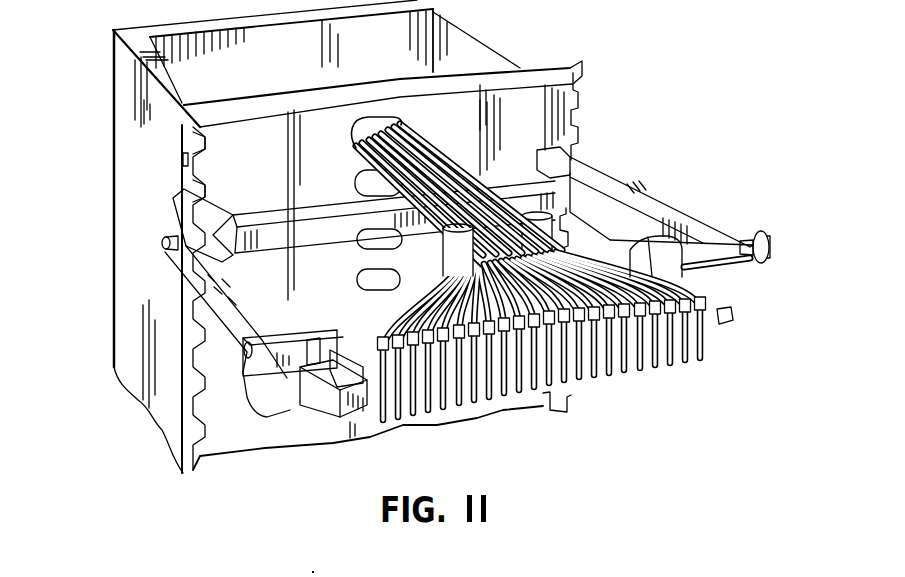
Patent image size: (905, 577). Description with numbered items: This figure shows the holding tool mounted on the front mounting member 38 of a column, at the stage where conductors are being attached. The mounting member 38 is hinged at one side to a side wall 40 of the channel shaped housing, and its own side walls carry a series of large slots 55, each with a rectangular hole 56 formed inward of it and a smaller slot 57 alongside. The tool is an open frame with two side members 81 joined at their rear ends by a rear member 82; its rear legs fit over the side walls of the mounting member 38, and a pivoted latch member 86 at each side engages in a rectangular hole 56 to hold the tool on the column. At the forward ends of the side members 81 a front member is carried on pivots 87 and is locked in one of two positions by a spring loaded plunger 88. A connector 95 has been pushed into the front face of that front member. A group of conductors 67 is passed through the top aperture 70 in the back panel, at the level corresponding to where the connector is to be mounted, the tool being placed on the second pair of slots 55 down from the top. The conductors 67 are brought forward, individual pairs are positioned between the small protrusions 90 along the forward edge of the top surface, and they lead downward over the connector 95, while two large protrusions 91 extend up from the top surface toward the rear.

The side wall 40 is at (447, 43).
The aperture 70 is at (405, 121).
The front mounting member 38 is at (510, 112).
The conductors 67 is at (545, 134).
The large protrusions 91 is at (553, 221).
The side members 81 is at (215, 284).
The spring loaded plunger 88 is at (753, 237).
The connector 95 is at (733, 320).
The small protrusions 90 is at (340, 420).
The pivots 87 is at (244, 352).
The pivoted latch member 86 is at (163, 243).
The rear member 82 is at (270, 215).
The slots 55 is at (198, 184).
The rectangular hole 56 is at (183, 159).
The smaller slot 57 is at (200, 139).